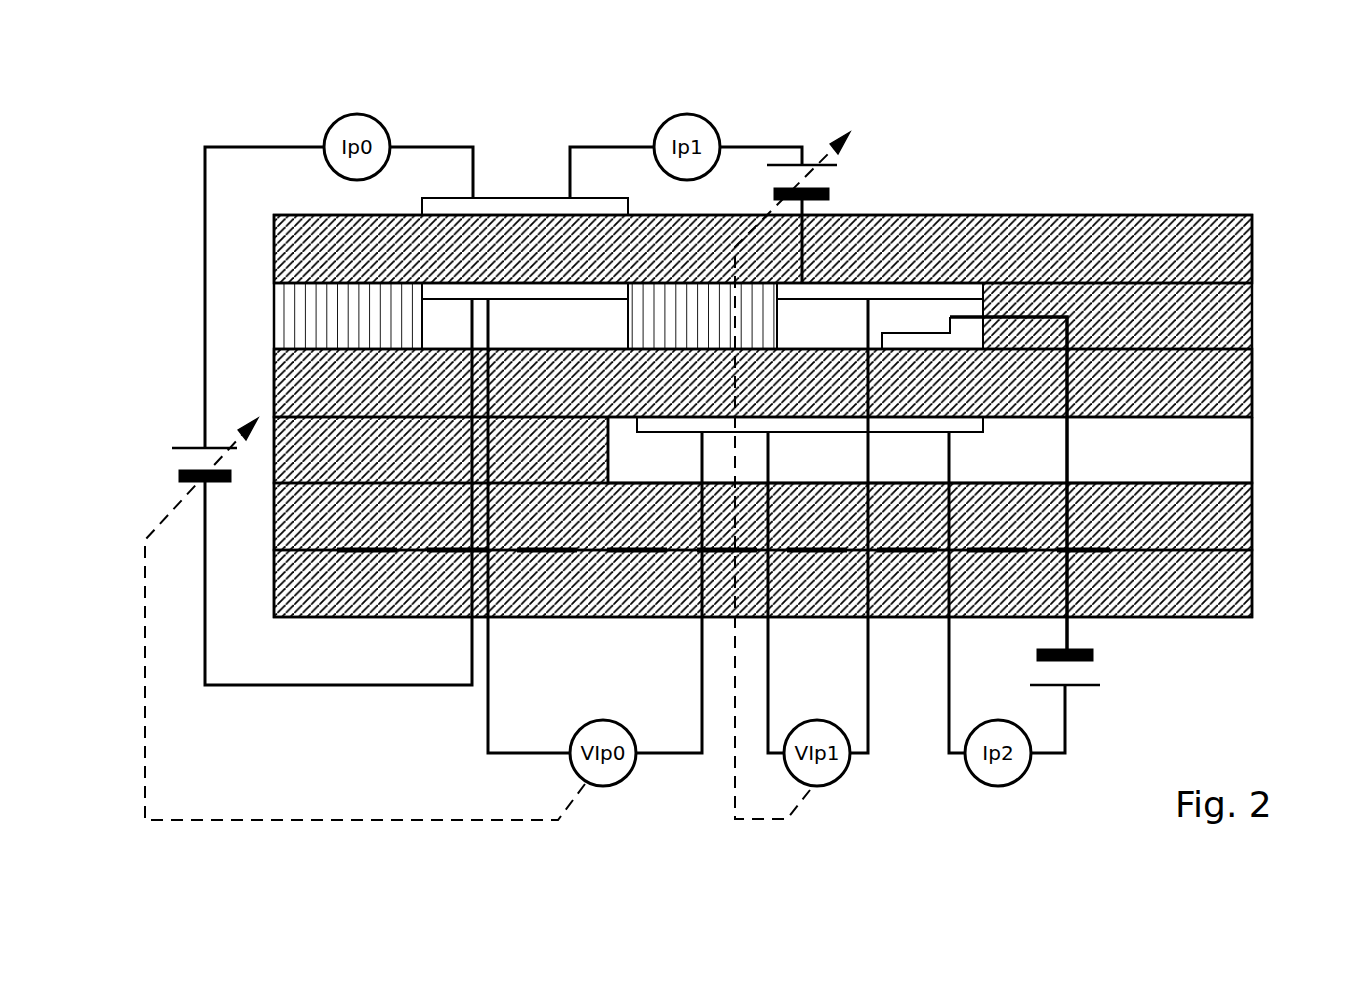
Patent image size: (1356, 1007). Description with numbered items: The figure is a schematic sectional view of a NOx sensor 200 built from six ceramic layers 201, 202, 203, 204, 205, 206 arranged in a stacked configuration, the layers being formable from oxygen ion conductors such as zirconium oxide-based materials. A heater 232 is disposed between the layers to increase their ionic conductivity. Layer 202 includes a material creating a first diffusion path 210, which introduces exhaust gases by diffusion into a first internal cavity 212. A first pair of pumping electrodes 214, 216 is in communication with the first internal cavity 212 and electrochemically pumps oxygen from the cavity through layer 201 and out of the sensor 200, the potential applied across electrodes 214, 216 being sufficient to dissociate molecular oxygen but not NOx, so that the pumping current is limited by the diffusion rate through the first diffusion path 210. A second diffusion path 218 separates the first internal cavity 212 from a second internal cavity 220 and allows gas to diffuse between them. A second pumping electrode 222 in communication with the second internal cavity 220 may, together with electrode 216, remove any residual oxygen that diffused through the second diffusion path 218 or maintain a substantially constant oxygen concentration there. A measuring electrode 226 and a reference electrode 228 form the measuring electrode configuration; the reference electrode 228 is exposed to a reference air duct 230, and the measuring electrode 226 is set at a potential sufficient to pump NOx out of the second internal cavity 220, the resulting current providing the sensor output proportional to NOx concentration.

The sensor 200 is at (1112, 92).
The layer 201 is at (1257, 249).
The layer 202 is at (1257, 317).
The layer 203 is at (1257, 383).
The layer 204 is at (1257, 448).
The layer 205 is at (1257, 516).
The layer 206 is at (1257, 583).
The first diffusion path 210 is at (347, 298).
The first internal cavity 212 is at (558, 324).
The pumping electrode 214 is at (552, 290).
The pumping electrode 216 is at (561, 207).
The second diffusion path 218 is at (693, 300).
The second internal cavity 220 is at (880, 324).
The second pumping electrode 222 is at (920, 290).
The measuring electrode 226 is at (977, 340).
The reference electrode 228 is at (968, 424).
The reference air duct 230 is at (930, 450).
The heater 232 is at (417, 550).